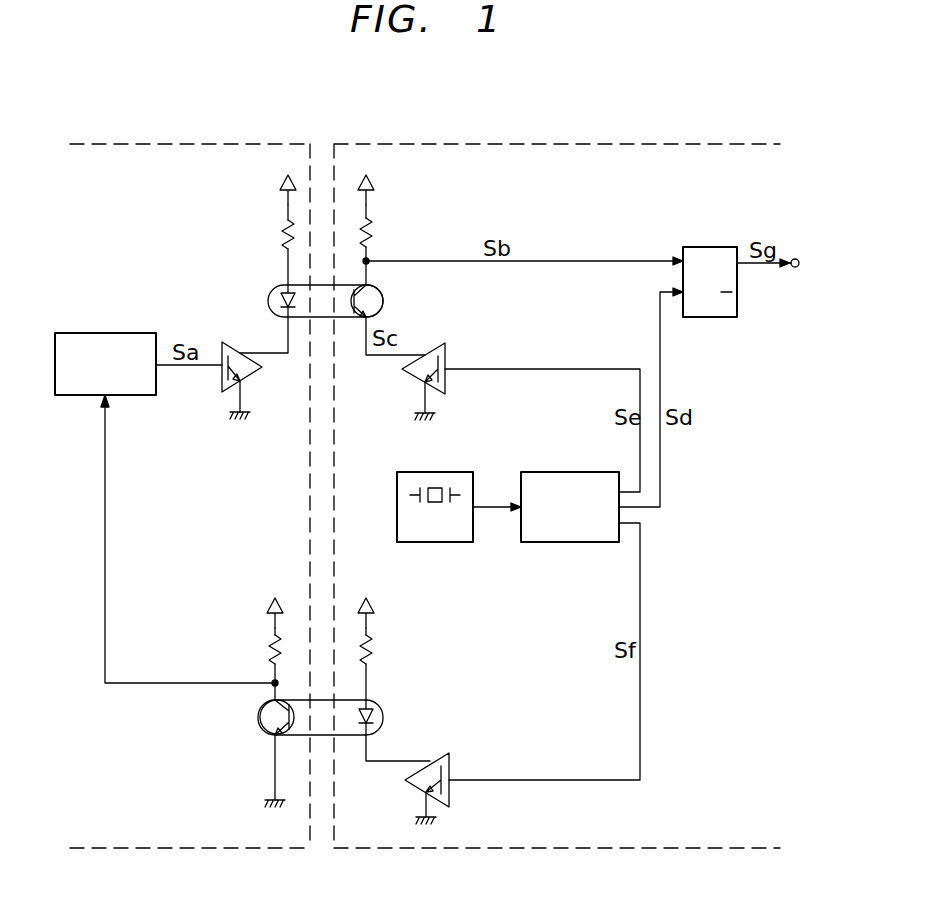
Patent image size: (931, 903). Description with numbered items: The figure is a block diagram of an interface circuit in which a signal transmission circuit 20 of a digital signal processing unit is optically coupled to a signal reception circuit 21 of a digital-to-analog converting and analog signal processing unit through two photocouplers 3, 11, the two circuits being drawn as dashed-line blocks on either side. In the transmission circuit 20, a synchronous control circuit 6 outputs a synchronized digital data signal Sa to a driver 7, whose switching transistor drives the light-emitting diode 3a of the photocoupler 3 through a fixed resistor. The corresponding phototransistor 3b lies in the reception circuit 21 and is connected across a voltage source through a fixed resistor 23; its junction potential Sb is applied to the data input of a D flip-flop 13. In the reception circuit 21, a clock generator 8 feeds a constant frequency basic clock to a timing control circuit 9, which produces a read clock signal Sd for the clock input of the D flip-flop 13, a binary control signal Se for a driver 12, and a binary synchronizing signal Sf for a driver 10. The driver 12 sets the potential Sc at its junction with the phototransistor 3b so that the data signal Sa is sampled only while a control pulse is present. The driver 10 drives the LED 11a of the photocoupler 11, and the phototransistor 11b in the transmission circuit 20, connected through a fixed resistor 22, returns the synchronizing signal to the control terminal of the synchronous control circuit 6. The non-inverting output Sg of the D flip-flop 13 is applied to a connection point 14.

The photocoupler 3 is at (329, 334).
The light-emitting diode 3a is at (272, 300).
The phototransistor 3b is at (383, 301).
The synchronous control circuit 6 is at (117, 333).
The driver 7 is at (222, 345).
The generator 8 is at (455, 472).
The timing control circuit 9 is at (579, 472).
The driver 10 is at (450, 757).
The photocoupler 11 is at (331, 752).
The light-emitting diode 11a is at (381, 712).
The phototransistor 11b is at (288, 735).
The driver 12 is at (446, 346).
The D flip-flop 13 is at (715, 317).
The connection point 14 is at (795, 267).
The signal transmission circuit 20 is at (248, 144).
The signal reception circuit 21 is at (604, 146).
The fixed resistor 22 is at (270, 652).
The fixed resistor 23 is at (372, 232).